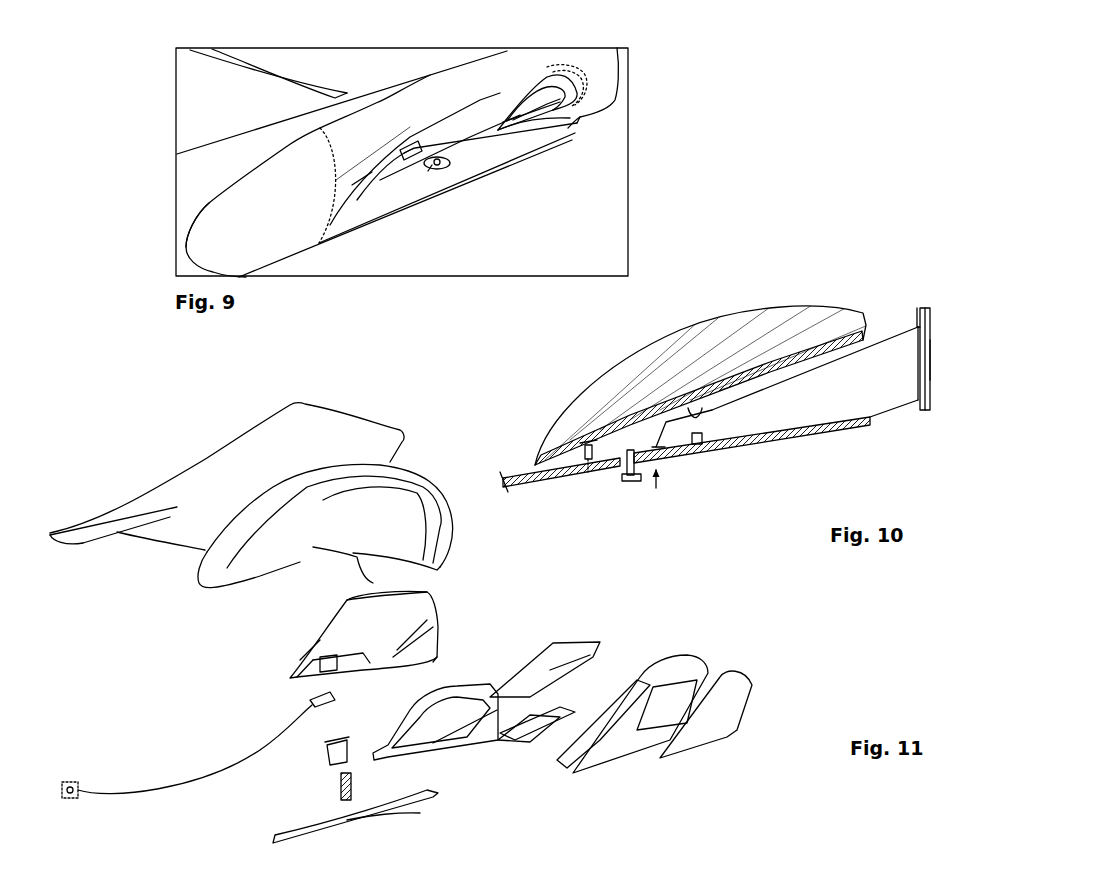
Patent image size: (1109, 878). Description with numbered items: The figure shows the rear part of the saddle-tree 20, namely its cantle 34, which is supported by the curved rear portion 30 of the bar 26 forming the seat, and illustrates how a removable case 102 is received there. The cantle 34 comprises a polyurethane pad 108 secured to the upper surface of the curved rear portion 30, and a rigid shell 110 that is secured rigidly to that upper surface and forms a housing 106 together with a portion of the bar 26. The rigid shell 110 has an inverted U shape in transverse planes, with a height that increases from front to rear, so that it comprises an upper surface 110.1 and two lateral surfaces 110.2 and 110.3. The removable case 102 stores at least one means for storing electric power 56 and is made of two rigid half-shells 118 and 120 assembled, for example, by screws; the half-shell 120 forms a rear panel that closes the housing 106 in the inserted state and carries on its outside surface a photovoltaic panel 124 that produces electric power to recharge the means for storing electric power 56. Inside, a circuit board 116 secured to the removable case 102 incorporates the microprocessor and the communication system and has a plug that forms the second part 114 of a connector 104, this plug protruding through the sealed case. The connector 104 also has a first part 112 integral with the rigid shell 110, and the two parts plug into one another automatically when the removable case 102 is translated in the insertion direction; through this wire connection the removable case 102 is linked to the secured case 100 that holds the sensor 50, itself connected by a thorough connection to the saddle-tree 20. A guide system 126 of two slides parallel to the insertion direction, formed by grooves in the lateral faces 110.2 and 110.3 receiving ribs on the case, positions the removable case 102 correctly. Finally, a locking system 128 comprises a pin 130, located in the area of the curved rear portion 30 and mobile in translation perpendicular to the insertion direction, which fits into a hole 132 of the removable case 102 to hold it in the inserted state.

In FIG. 9, the saddle-tree 20 is at (164, 104).
In FIG. 9, the bar 26 is at (400, 0).
In FIG. 10, the bar 26 is at (530, 487).
In FIG. 11, the bar 26 is at (413, 808).
In FIG. 10, the curved rear portion 30 is at (757, 443).
In FIG. 9, the cantle 34 is at (438, 70).
In FIG. 10, the cantle 34 is at (674, 306).
In FIG. 11, the cantle 34 is at (414, 446).
In FIG. 11, the sensor 50 is at (79, 782).
In FIG. 11, the means for storing electric power 56 is at (530, 733).
In FIG. 11, the secured case 100 is at (82, 787).
In FIG. 10, the removable case 102 is at (838, 370).
In FIG. 11, the removable case 102 is at (740, 780).
In FIG. 9, the connector 104 is at (404, 150).
In FIG. 10, the connector 104 is at (588, 470).
In FIG. 11, the connector 104 is at (323, 713).
In FIG. 9, the housing 106 is at (558, 120).
In FIG. 10, the housing 106 is at (748, 383).
In FIG. 9, the pad 108 is at (213, 228).
In FIG. 10, the pad 108 is at (640, 353).
In FIG. 11, the pad 108 is at (417, 483).
In FIG. 9, the rigid shell 110 is at (499, 113).
In FIG. 10, the rigid shell 110 is at (700, 408).
In FIG. 11, the rigid shell 110 is at (437, 592).
In FIG. 11, the upper surface 110.1 is at (362, 610).
In FIG. 11, the lateral surface 110.2 is at (313, 643).
In FIG. 11, the lateral surface 110.3 is at (430, 647).
In FIG. 10, the first part 112 is at (570, 440).
In FIG. 11, the first part 112 is at (310, 703).
In FIG. 10, the second part 114 is at (640, 437).
In FIG. 11, the second part 114 is at (533, 697).
In FIG. 11, the circuit board 116 is at (570, 643).
In FIG. 10, the half-shell 118 is at (803, 383).
In FIG. 11, the half-shell 118 is at (457, 688).
In FIG. 10, the half-shell 120 is at (923, 307).
In FIG. 11, the half-shell 120 is at (733, 687).
In FIG. 10, the photovoltaic panel 124 is at (932, 357).
In FIG. 9, the guide system 126 is at (568, 97).
In FIG. 11, the guide system 126 is at (322, 623).
In FIG. 9, the locking system 128 is at (441, 175).
In FIG. 10, the locking system 128 is at (645, 492).
In FIG. 11, the locking system 128 is at (325, 787).
In FIG. 9, the pin 130 is at (427, 168).
In FIG. 10, the pin 130 is at (627, 455).
In FIG. 10, the hole 132 is at (697, 450).